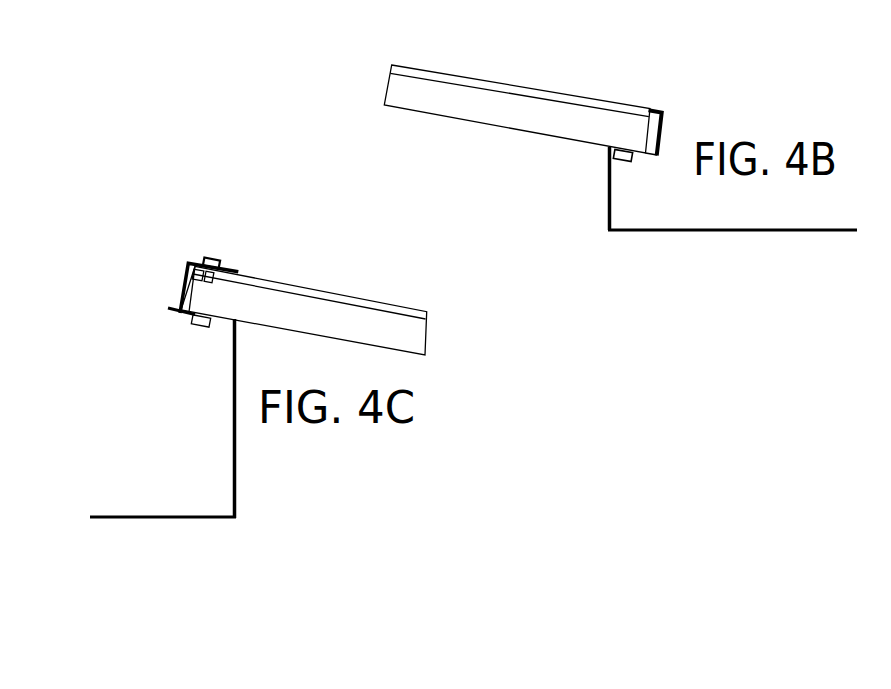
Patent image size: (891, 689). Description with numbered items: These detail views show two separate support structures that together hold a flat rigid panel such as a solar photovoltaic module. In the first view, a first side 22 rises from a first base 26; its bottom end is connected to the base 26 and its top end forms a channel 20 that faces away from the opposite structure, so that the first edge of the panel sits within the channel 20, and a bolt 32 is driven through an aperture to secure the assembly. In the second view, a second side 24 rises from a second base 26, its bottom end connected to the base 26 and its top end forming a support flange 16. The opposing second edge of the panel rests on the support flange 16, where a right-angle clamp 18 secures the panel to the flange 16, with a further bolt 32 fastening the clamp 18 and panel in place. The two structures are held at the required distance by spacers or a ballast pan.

In FIG. 4C, the support flange 16 is at (190, 317).
In FIG. 4C, the clamp 18 is at (187, 278).
In FIG. 4B, the channel 20 is at (663, 122).
In FIG. 4B, the first side 22 is at (608, 205).
In FIG. 4C, the second side 24 is at (237, 457).
In FIG. 4B, the base 26 is at (725, 230).
In FIG. 4C, the base 26 is at (166, 518).
In FIG. 4B, the bolts 32 is at (627, 155).
In FIG. 4C, the bolts 32 is at (207, 262).